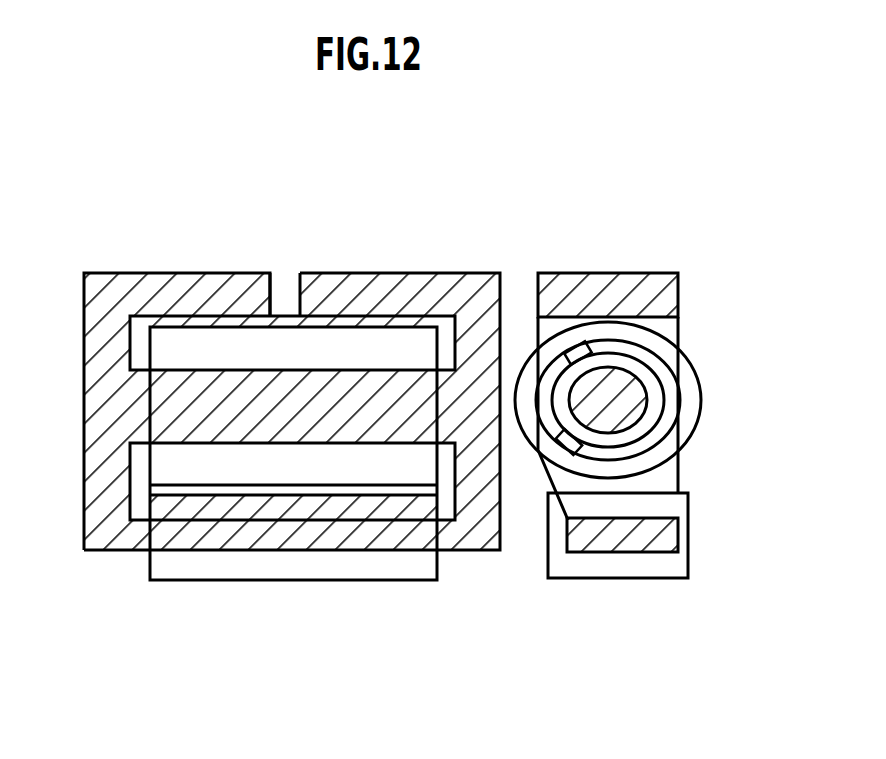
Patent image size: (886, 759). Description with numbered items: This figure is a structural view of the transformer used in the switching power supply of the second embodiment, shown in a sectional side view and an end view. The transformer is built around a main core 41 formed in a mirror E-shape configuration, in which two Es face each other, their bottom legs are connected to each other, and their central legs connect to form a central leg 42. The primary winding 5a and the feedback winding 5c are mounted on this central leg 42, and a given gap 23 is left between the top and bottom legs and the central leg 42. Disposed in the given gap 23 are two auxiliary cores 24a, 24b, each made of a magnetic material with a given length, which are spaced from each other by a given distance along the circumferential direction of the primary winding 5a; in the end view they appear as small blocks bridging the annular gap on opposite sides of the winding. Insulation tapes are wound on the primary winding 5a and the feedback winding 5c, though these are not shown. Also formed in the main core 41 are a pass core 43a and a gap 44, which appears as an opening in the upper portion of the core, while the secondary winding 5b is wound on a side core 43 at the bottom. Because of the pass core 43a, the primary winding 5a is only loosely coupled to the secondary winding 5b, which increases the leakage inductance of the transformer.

The main core 41 is at (347, 273).
The central leg 42 is at (173, 417).
The side core 43 is at (202, 540).
The pass core 43a is at (177, 273).
The gap 44 is at (287, 278).
The primary winding 5a is at (407, 338).
The secondary winding 5b is at (355, 580).
The feedback winding 5c is at (650, 342).
The given gap 23 is at (662, 425).
The auxiliary core 24a is at (573, 340).
The auxiliary core 24b is at (568, 443).